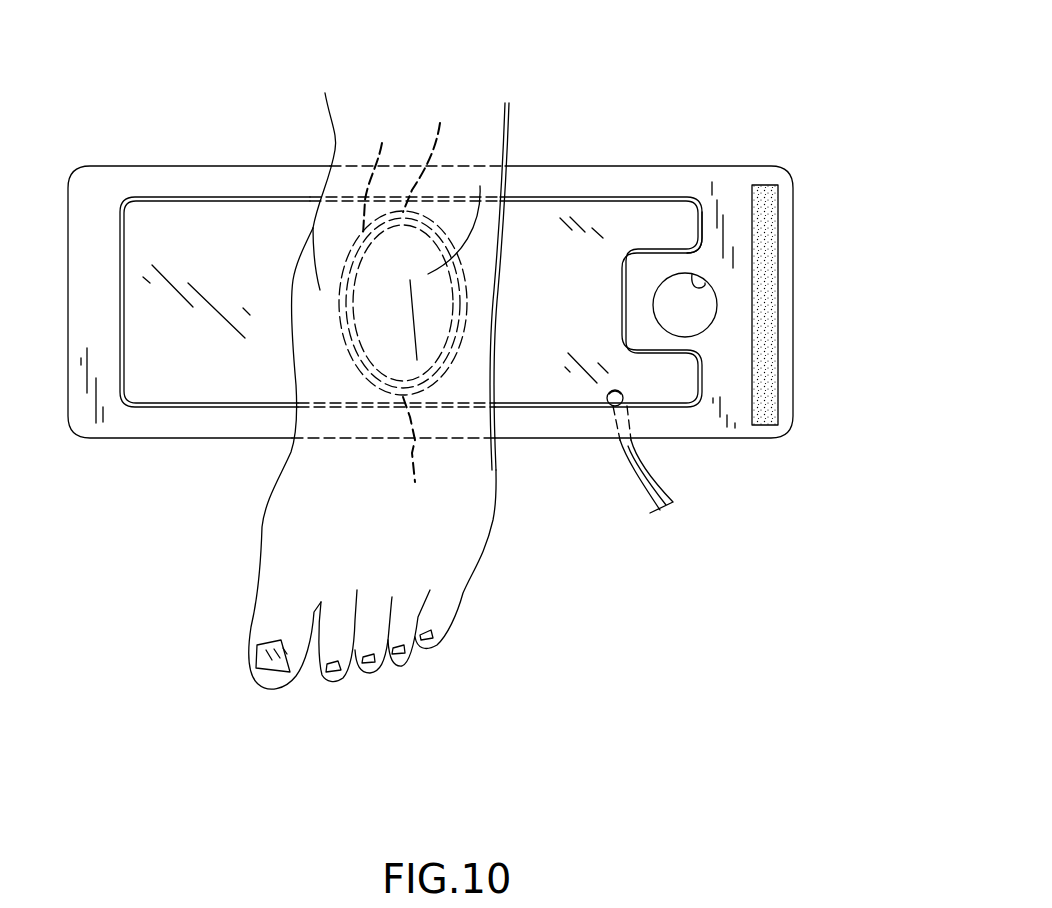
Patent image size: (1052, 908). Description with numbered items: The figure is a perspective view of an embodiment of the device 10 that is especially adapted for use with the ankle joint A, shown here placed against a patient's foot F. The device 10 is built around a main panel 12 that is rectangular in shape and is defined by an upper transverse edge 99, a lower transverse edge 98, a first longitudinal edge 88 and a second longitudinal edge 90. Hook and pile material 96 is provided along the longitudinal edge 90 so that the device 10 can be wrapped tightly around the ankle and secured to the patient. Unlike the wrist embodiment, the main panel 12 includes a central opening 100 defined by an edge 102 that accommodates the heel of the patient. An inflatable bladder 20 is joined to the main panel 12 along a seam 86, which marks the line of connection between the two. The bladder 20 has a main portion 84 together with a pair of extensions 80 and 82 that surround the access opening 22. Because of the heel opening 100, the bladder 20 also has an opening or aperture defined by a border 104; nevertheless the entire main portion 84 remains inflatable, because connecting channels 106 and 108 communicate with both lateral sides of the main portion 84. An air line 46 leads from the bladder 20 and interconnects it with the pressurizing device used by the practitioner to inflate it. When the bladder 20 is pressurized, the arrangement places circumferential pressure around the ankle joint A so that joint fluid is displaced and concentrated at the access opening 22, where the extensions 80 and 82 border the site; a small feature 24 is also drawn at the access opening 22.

The device 10 is at (672, 94).
The main panel 12 is at (102, 178).
The inflatable bladder 20 is at (695, 167).
The access opening 22 is at (703, 315).
The notch 24 is at (694, 277).
The air line 46 is at (628, 458).
The extension 80 is at (690, 222).
The extension 82 is at (655, 385).
The main portion 84 is at (259, 256).
The seam 86 is at (240, 200).
The first longitudinal edge 88 is at (68, 313).
The second longitudinal edge 90 is at (793, 370).
The hook and pile material 96 is at (768, 221).
The lower transverse edge 98 is at (147, 440).
The upper transverse edge 99 is at (175, 165).
The central opening 100 is at (440, 305).
The edge 102 is at (455, 315).
The border 104 is at (381, 176).
The connecting channel 106 is at (431, 156).
The connecting channel 108 is at (416, 459).
The ankle joint A is at (524, 182).
The foot F is at (463, 553).